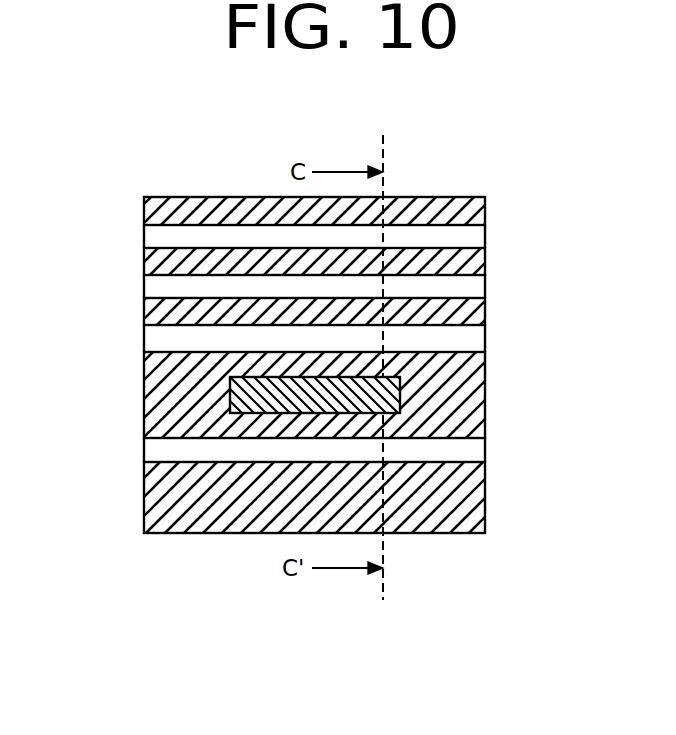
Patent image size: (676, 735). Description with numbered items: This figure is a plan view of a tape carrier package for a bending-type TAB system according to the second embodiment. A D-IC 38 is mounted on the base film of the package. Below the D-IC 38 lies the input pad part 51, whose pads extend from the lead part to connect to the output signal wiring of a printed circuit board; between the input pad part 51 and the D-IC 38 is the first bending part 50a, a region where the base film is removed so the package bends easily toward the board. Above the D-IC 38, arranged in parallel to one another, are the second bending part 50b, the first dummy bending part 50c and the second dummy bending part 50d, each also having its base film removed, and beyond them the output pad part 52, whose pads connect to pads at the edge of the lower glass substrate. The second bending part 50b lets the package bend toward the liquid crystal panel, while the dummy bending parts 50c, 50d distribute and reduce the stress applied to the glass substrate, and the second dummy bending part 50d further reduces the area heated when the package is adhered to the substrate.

The output pad part 52 is at (485, 203).
The second dummy bending part 50d is at (485, 237).
The first dummy bending part 50c is at (485, 286).
The second bending part 50b is at (485, 337).
The first bending part 50a is at (143, 452).
The D-IC 38 is at (401, 390).
The input pad part 51 is at (143, 503).